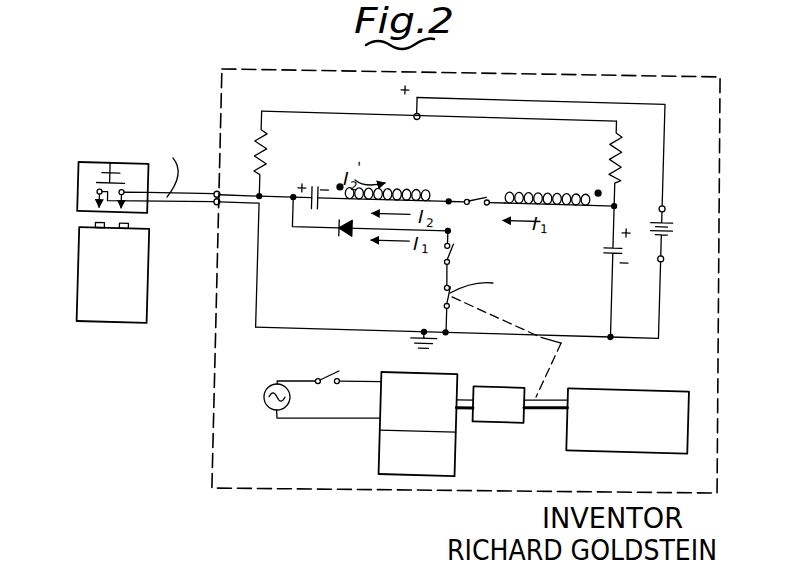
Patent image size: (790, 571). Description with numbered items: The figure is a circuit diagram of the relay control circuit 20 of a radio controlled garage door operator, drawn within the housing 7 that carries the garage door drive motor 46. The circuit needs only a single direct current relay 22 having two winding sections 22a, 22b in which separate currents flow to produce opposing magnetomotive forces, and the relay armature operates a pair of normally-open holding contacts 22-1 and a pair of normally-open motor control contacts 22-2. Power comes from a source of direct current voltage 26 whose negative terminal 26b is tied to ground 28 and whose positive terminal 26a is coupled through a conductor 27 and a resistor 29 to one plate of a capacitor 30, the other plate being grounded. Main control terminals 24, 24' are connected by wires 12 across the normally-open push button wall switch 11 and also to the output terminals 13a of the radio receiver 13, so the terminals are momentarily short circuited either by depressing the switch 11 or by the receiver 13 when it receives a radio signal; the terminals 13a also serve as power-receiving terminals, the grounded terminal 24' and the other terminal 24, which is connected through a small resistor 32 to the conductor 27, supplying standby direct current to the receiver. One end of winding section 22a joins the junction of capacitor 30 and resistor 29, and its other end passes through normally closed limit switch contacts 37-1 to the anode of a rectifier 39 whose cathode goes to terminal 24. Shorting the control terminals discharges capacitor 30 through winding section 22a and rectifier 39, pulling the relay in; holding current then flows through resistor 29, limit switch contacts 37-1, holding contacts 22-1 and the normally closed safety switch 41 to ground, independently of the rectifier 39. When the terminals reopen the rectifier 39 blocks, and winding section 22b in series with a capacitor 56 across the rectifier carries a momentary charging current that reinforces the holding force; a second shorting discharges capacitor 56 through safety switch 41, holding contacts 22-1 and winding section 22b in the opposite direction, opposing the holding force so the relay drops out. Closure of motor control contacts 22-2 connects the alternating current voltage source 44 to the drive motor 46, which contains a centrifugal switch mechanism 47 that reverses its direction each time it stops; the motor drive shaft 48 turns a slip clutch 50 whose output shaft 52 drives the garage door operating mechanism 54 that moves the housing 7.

The housing 7 is at (249, 72).
The relay control circuit 20 is at (291, 110).
The push button wall switch 11 is at (107, 172).
The wires 12 is at (181, 168).
The control terminal 24 is at (218, 182).
The control terminal 24' is at (178, 260).
The radio receiver 13 is at (78, 290).
The output terminals 13a is at (94, 238).
The resistor 32 is at (301, 152).
The capacitor 56 is at (325, 179).
The direct current relay 22 is at (380, 172).
The winding section 22b is at (441, 164).
The limit switch contacts 37-1 is at (475, 197).
The winding section 22a is at (578, 184).
The resistor 29 is at (606, 156).
The conductor 27 is at (552, 98).
The positive terminal 26a is at (703, 198).
The source of direct current voltage 26 is at (675, 224).
The negative voltage terminal 26b is at (709, 277).
The capacitor 30 is at (602, 248).
The holding contacts 22-1 is at (452, 262).
The rectifier 39 is at (337, 235).
The safety switch 41 is at (446, 300).
The ground 28 is at (439, 341).
The garage door drive motor 46 is at (413, 375).
The motor control contacts 22-2 is at (336, 369).
The alternating current voltage source 44 is at (270, 410).
The centrifugal switch mechanism 47 is at (387, 472).
The drive shaft 48 is at (466, 413).
The slip clutch 50 is at (513, 385).
The output shaft 52 is at (549, 395).
The garage door operating mechanism 54 is at (619, 384).